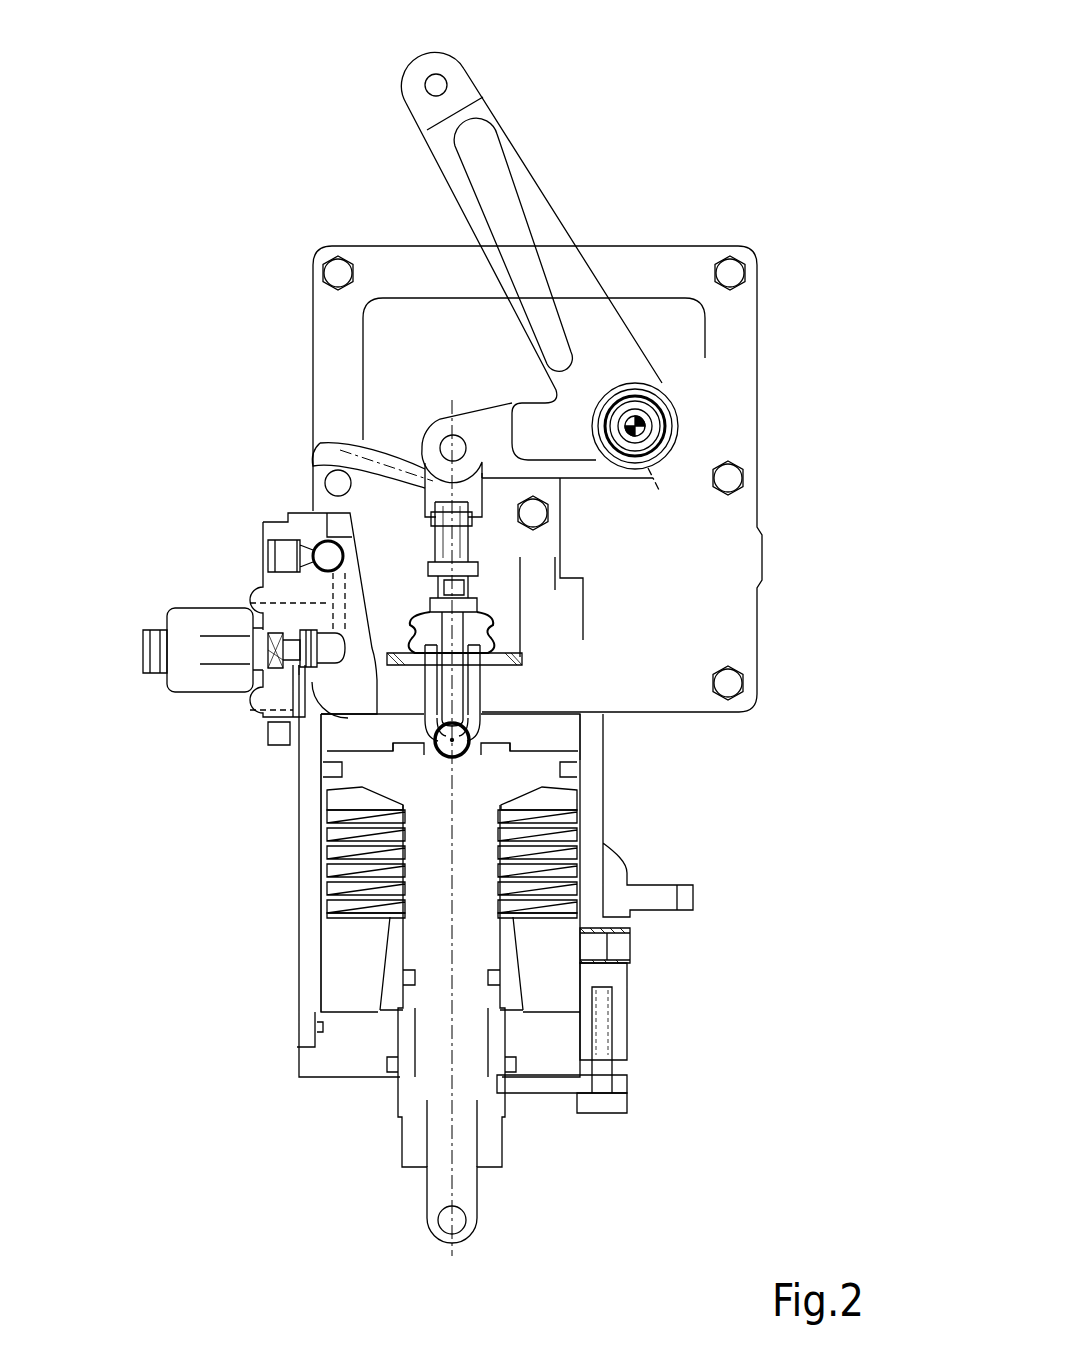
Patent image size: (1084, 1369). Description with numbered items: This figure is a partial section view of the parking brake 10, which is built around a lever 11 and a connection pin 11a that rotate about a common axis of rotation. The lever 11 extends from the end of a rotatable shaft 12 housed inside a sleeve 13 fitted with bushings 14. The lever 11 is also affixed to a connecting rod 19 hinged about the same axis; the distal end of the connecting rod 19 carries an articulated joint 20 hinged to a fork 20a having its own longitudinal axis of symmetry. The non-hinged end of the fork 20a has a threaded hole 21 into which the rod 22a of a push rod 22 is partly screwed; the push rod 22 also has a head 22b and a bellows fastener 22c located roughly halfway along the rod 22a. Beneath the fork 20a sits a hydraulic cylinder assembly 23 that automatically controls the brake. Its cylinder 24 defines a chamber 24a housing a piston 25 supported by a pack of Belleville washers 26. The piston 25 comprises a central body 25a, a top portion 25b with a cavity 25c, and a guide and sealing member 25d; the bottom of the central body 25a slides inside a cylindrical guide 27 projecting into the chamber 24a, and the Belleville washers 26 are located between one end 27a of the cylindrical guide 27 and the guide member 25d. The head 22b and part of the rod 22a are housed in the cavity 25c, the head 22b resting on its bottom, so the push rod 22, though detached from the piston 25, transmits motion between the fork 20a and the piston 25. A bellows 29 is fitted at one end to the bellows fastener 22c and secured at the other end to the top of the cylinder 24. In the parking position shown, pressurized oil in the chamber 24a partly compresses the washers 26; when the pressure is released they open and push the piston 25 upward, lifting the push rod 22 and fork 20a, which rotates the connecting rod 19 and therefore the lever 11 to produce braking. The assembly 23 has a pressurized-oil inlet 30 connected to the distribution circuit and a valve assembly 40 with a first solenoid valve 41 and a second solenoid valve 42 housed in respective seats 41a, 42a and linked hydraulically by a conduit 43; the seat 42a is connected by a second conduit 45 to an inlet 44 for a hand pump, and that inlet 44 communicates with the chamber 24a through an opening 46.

The parking brake 10 is at (266, 183).
The lever 11 is at (555, 213).
The connection pin 11a is at (437, 78).
The rotatable shaft 12 is at (660, 428).
The sleeve 13 is at (668, 410).
The bushings 14 is at (668, 440).
The connecting rod 19 is at (511, 480).
The articulated joint 20 is at (440, 440).
The fork 20a is at (330, 452).
The threaded hole 21 is at (440, 528).
The push rod 22 is at (445, 589).
The rod 22a is at (472, 550).
The head 22b is at (466, 735).
The bellows fastener 22c is at (467, 600).
The hydraulic cylinder assembly 23 is at (256, 906).
The cylinder 24 is at (598, 815).
The chamber 24a is at (325, 940).
The piston 25 is at (435, 1002).
The central body 25a is at (392, 972).
The top portion 25b is at (425, 690).
The cavity 25c is at (490, 720).
The guide and sealing member 25d is at (410, 750).
The pack of Belleville washers 26 is at (333, 855).
The cylindrical guide 27 is at (385, 1003).
The end of the cylindrical guide 27a is at (630, 924).
The bellows 29 is at (500, 635).
The pressurized-oil inlet 30 is at (262, 570).
The valve assembly 40 is at (156, 586).
The first solenoid valve 41 is at (300, 540).
The seat 41a is at (323, 545).
The second solenoid valve 42 is at (178, 690).
The seat 42a is at (265, 632).
The conduit 43 is at (283, 603).
The inlet 44 is at (292, 728).
The second conduit 45 is at (275, 700).
The opening 46 is at (300, 750).